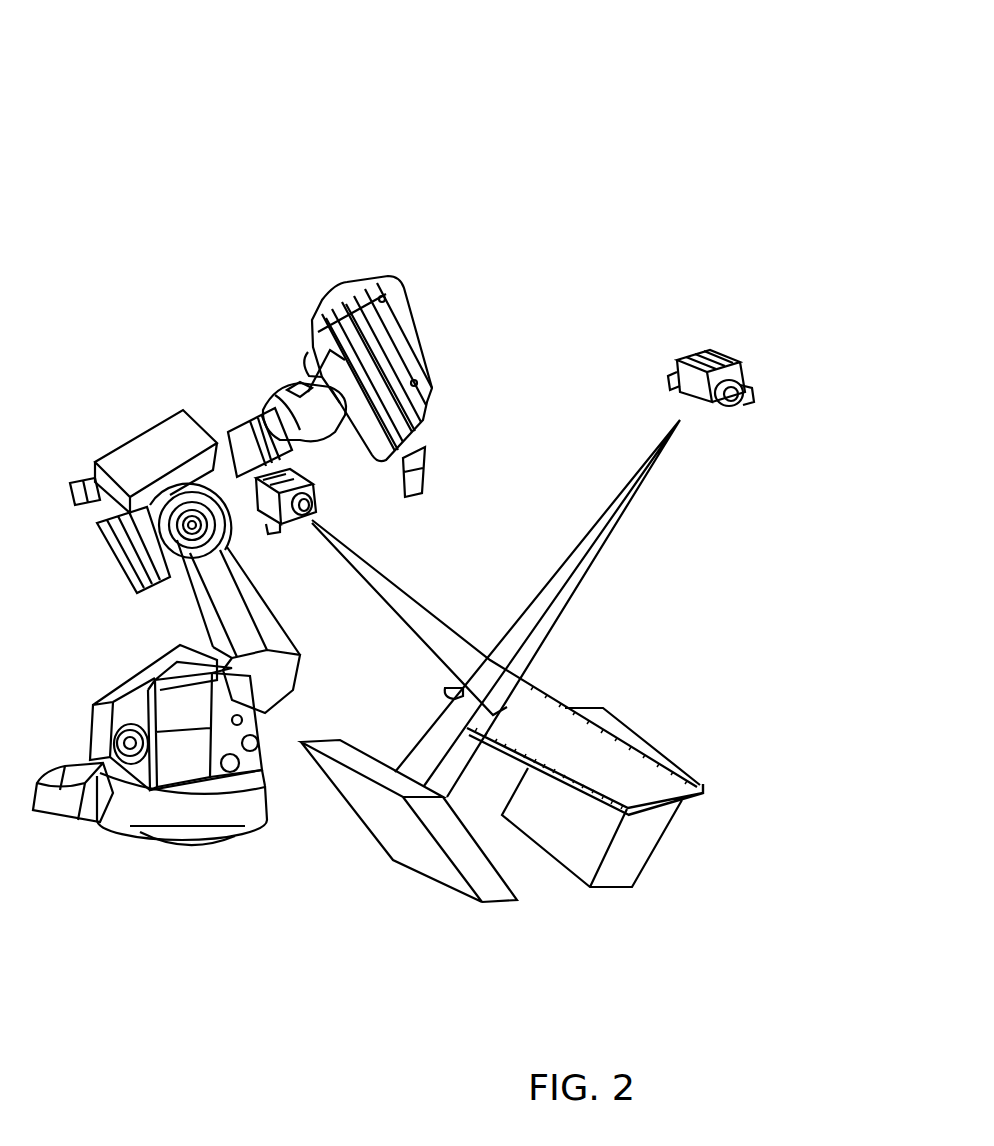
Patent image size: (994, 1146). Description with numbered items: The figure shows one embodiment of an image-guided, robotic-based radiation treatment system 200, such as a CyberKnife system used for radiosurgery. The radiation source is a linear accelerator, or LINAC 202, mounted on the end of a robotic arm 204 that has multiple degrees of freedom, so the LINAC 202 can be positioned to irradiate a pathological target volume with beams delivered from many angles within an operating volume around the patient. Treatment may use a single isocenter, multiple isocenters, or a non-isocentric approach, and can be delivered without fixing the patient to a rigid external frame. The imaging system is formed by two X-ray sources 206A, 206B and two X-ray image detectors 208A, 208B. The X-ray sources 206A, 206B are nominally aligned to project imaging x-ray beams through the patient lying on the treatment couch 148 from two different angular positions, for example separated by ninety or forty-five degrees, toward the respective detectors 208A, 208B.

The image-guided, robotic-based radiation treatment system 200 is at (756, 64).
The linear accelerator (LINAC) 202 is at (378, 272).
The robotic arm 204 is at (237, 418).
The X-ray source 206A is at (317, 500).
The X-ray source 206B is at (720, 345).
The treatment couch 148 is at (587, 740).
The X-ray image detector (imager) 208A is at (682, 802).
The X-ray image detector (imager) 208B is at (415, 858).